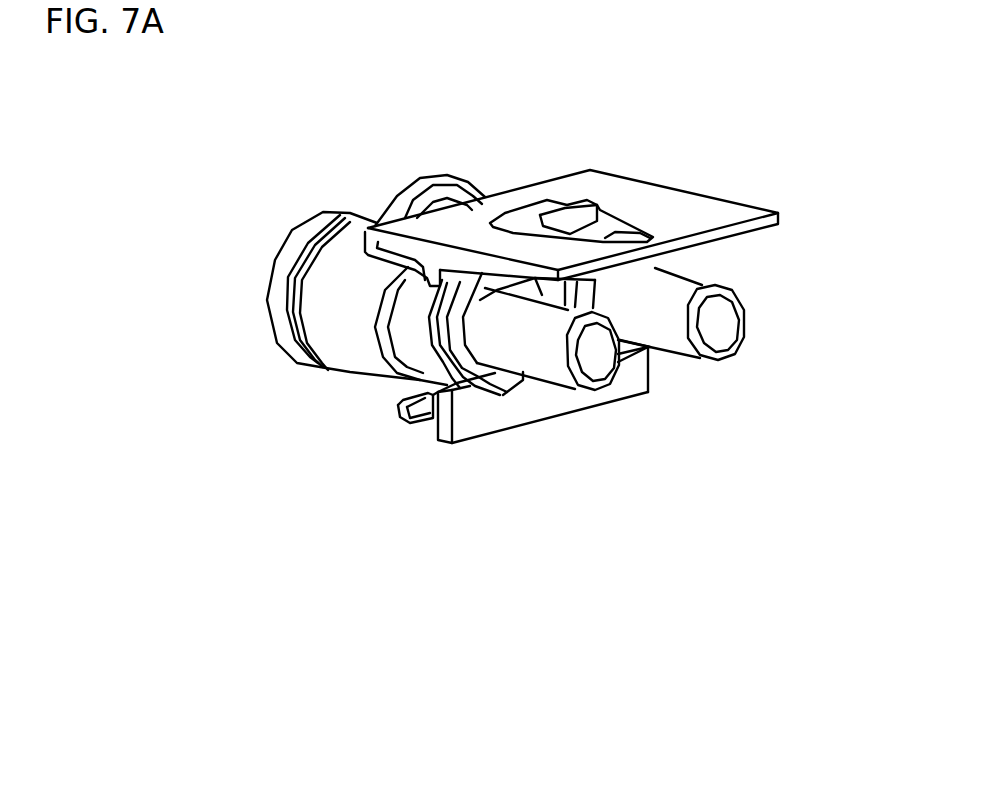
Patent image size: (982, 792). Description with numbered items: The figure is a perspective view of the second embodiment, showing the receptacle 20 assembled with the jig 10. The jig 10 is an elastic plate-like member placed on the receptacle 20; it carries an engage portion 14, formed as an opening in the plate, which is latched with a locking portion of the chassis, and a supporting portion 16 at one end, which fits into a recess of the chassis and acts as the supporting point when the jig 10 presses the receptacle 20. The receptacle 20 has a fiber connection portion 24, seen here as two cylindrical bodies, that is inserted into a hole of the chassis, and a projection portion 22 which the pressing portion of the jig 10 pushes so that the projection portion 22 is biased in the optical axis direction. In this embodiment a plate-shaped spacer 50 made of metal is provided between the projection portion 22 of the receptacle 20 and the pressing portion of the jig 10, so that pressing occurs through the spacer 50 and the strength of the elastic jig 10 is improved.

The jig 10 is at (707, 172).
The engage portion 14 is at (601, 205).
The supporting portion 16 is at (418, 427).
The receptacle 20 is at (342, 200).
The projection portion 22 is at (510, 388).
The fiber connection portion 24 is at (743, 307).
The spacer 50 is at (465, 430).